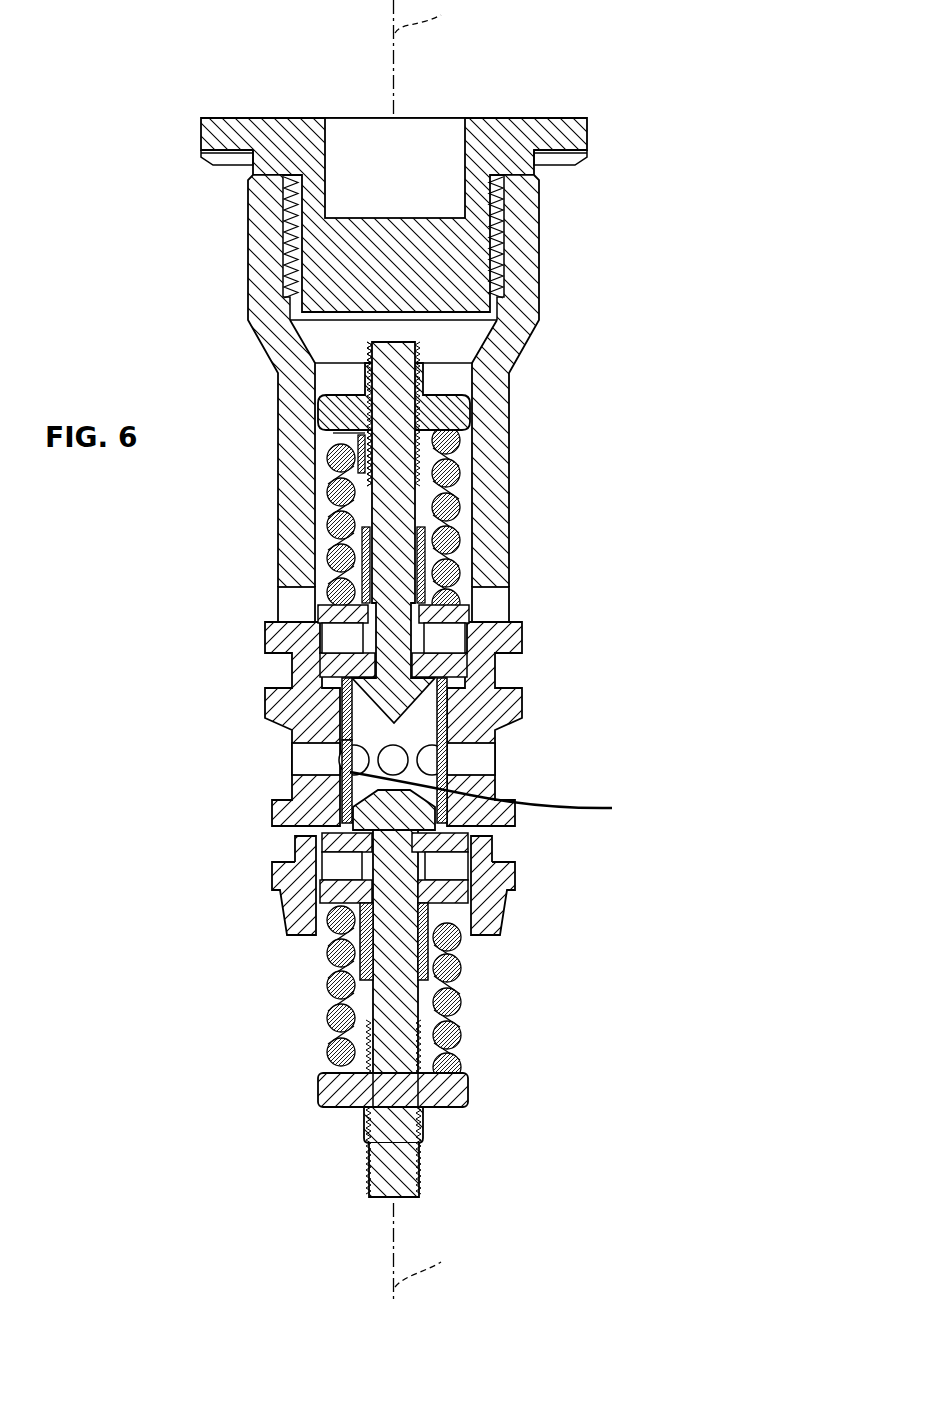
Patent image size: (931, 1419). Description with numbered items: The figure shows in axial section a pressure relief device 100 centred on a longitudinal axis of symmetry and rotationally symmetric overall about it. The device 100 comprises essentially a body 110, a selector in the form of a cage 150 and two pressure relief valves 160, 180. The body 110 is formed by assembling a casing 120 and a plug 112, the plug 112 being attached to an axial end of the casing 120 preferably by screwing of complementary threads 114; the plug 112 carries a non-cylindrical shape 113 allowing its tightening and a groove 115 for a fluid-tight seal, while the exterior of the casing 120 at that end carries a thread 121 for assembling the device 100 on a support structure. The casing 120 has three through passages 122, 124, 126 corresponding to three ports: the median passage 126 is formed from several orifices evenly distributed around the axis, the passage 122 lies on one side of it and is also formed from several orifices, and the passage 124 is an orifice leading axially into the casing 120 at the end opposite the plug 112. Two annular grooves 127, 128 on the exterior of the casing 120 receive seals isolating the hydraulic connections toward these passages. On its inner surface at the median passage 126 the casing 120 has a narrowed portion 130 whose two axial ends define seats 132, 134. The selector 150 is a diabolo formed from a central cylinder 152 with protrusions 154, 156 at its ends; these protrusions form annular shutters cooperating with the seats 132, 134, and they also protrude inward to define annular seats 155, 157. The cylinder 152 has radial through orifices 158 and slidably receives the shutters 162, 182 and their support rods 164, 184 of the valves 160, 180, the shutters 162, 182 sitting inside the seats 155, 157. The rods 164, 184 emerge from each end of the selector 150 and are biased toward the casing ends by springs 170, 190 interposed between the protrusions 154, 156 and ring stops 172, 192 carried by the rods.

The pressure relief device 100 is at (122, 700).
The body 110 is at (532, 561).
The plug 112 is at (505, 137).
The shape 113 is at (333, 152).
The complementary threads 114 is at (515, 247).
The groove 115 is at (558, 172).
The casing 120 is at (495, 505).
The thread 121 is at (542, 254).
The through passage 122 is at (276, 605).
The through passage 124 is at (470, 946).
The median through passage 126 is at (290, 760).
The annular groove 127 is at (526, 672).
The annular groove 128 is at (516, 846).
The narrowed portion 130 is at (477, 808).
The seat 132 is at (347, 700).
The seat 134 is at (340, 826).
The selector 150 is at (443, 723).
The central cylinder 152 is at (343, 737).
The protrusion 154 is at (343, 667).
The annular seat 155 is at (433, 668).
The protrusion 156 is at (365, 838).
The annular seat 157 is at (512, 836).
The radial through orifices 158 is at (500, 802).
The pressure relief valve 160 is at (314, 481).
The shutter 162 is at (393, 724).
The support rod 164 is at (385, 440).
The spring 170 is at (448, 468).
The stop 172 is at (455, 413).
The pressure relief valve 180 is at (315, 1006).
The shutter 182 is at (390, 830).
The support rod 184 is at (393, 1162).
The spring 190 is at (453, 1008).
The stop 192 is at (453, 1093).